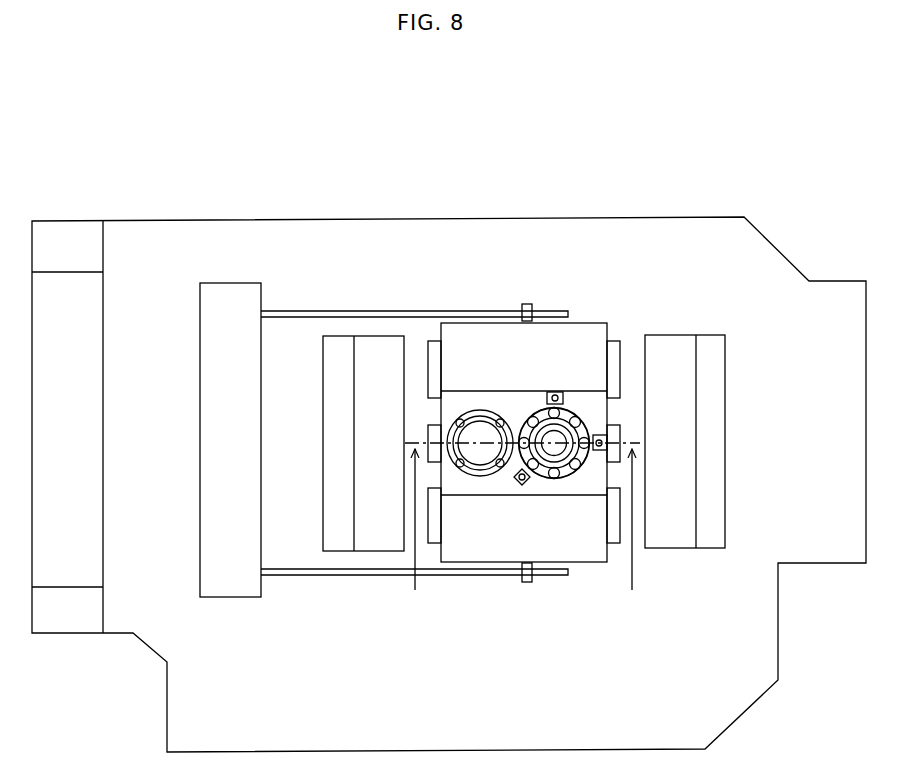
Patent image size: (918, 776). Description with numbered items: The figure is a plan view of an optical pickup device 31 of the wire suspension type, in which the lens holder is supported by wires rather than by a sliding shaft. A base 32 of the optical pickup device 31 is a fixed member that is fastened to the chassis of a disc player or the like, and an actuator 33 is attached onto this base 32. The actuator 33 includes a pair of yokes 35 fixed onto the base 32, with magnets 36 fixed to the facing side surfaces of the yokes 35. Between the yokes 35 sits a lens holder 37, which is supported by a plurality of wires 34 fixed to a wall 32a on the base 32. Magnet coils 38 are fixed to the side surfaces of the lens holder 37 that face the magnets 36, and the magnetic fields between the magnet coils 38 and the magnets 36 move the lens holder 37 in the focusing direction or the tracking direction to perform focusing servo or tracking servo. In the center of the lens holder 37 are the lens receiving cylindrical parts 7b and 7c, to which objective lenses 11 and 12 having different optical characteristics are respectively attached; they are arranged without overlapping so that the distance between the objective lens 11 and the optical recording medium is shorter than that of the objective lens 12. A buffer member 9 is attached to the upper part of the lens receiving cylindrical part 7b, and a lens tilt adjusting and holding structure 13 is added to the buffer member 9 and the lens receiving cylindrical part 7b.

The optical pickup device 31 is at (693, 184).
The base 32 is at (502, 218).
The wall 32a is at (200, 425).
The actuator 33 is at (653, 296).
The wires 34 is at (358, 310).
The yokes 35 is at (323, 423).
The magnets 36 is at (354, 458).
The lens holder 37 is at (585, 322).
The magnet coils 38 is at (428, 356).
The lens receiving cylindrical part 7c is at (473, 412).
The lens receiving cylindrical part 7b is at (535, 412).
The buffer member 9 is at (571, 406).
The objective lens 11 is at (550, 460).
The objective lens 12 is at (485, 460).
The lens tilt adjusting and holding structure 13 is at (581, 480).